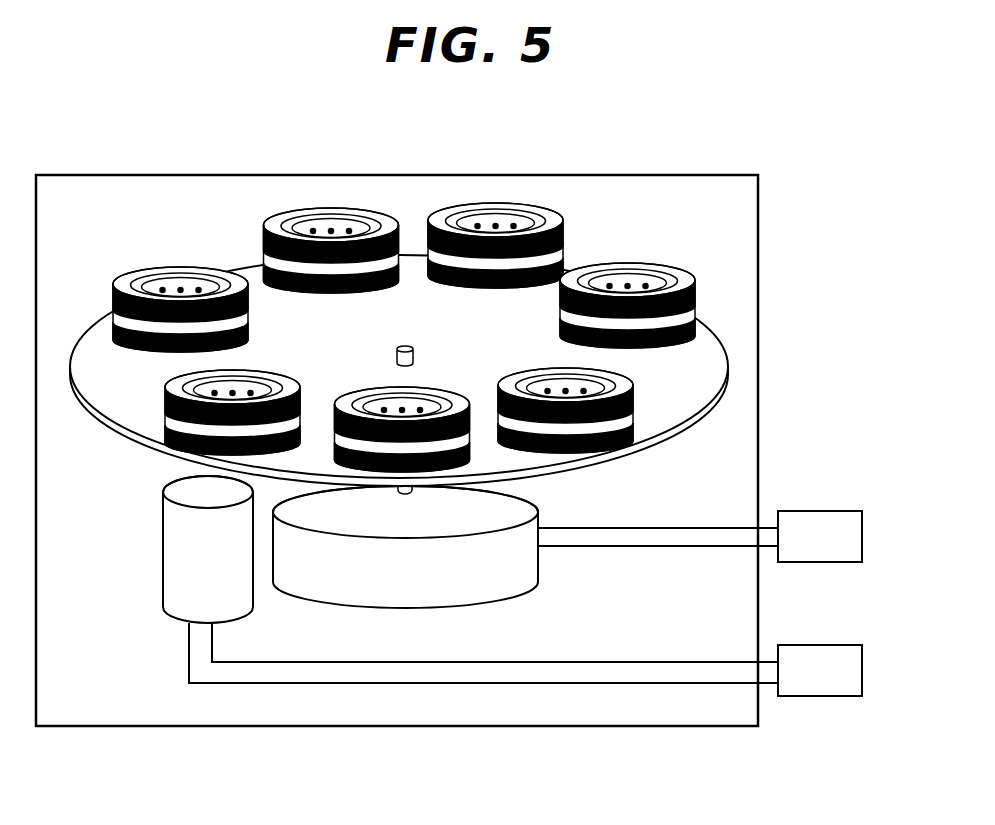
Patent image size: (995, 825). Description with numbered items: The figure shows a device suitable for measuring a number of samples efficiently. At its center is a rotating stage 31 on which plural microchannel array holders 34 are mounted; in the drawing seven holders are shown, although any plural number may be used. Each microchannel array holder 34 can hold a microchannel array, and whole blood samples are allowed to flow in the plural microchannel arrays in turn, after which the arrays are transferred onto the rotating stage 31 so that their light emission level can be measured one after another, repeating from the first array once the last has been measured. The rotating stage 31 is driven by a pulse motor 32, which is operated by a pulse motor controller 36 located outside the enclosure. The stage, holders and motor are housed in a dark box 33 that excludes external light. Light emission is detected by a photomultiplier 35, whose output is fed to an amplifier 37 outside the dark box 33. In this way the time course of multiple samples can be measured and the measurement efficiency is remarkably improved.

The rotating stage 31 is at (698, 427).
The pulse motor 32 is at (542, 517).
The dark box 33 is at (655, 174).
The microchannel array holder 34 is at (653, 265).
The photomultiplier 35 is at (162, 522).
The pulse motor controller 36 is at (822, 510).
The amplifier 37 is at (822, 698).